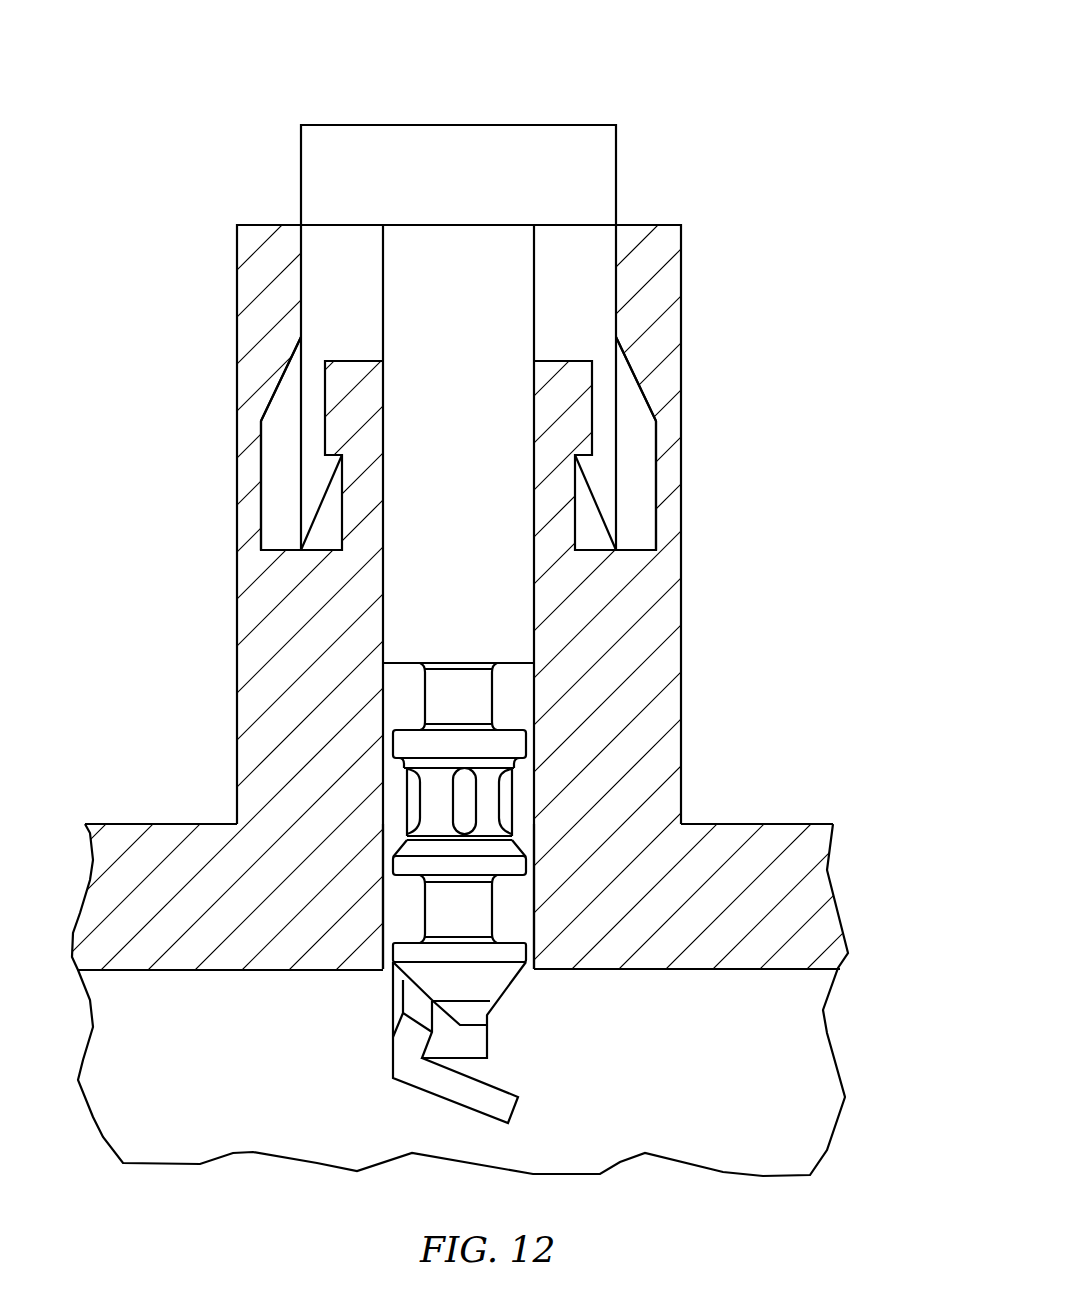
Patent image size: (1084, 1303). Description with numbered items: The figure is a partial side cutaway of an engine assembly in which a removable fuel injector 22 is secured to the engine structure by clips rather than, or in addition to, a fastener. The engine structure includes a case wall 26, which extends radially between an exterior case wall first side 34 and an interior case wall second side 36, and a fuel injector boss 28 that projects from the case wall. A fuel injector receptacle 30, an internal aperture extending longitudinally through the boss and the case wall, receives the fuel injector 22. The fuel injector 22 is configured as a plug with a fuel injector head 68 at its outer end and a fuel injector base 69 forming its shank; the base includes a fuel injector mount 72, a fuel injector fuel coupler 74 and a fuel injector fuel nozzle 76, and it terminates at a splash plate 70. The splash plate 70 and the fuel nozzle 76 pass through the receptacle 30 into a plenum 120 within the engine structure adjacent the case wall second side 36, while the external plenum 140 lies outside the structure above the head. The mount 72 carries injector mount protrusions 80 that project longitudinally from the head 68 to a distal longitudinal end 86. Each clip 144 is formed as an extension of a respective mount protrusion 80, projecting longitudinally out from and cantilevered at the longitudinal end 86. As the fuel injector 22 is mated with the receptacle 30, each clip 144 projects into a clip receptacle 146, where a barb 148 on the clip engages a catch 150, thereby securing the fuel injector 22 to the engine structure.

The fuel injector 22 is at (625, 77).
The case wall 26 is at (840, 880).
The fuel injector boss 28 is at (690, 250).
The fuel injector receptacle 30 is at (394, 920).
The case wall first side 34 is at (800, 822).
The case wall second side 36 is at (793, 970).
The fuel injector head 68 is at (637, 151).
The fuel injector base 69 is at (384, 613).
The splash plate 70 is at (527, 1105).
The fuel injector mount 72 is at (540, 597).
The fuel injector fuel coupler 74 is at (531, 747).
The fuel injector fuel nozzle 76 is at (507, 1020).
The injector mount protrusion 80 is at (296, 312).
The distal longitudinal end 86 is at (359, 362).
The plenum 120 is at (737, 1089).
The external plenum 140 is at (179, 87).
The clip 144 is at (294, 474).
The clip receptacle 146 is at (286, 528).
The barb 148 is at (310, 496).
The catch 150 is at (333, 448).